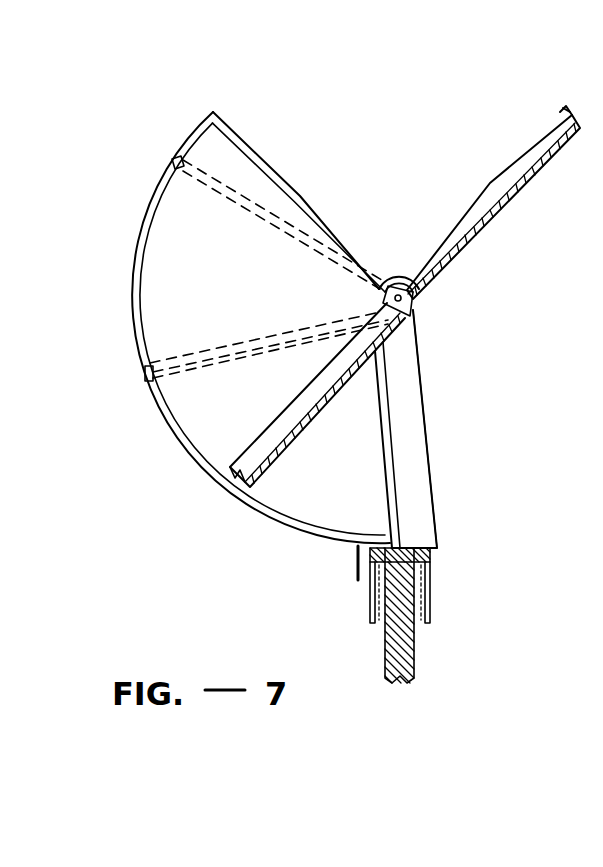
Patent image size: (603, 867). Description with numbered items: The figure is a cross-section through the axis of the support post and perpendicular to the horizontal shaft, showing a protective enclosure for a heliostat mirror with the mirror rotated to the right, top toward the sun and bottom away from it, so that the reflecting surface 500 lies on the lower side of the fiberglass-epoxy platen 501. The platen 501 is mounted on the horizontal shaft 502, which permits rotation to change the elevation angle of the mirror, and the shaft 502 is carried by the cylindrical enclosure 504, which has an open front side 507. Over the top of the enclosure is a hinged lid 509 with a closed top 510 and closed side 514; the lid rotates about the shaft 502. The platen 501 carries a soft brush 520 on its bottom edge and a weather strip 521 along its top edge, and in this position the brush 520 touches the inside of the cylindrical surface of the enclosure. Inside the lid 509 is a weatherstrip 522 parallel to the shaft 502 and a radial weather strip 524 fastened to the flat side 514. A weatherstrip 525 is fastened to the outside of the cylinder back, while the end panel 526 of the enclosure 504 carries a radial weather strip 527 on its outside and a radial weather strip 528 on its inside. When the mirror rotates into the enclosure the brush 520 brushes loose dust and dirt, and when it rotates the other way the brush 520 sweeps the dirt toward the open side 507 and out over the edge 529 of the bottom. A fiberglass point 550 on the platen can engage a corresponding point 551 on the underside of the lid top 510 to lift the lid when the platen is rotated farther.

The reflecting surface 500 is at (523, 192).
The fiberglass-epoxy platen 501 is at (562, 112).
The horizontal shaft 502 is at (392, 298).
The cylindrical enclosure 504 is at (432, 548).
The open front side 507 is at (432, 478).
The hinged lid 509 is at (213, 112).
The closed top 510 is at (290, 181).
The closed side 514 is at (250, 295).
The soft brush 520 is at (230, 468).
The weather strip 521 is at (565, 110).
The weatherstrip 522 is at (145, 373).
The radial weather strip 524 is at (235, 350).
The weatherstrip 525 is at (174, 163).
The end panel 526 is at (355, 475).
The radial weather strip 527 is at (256, 214).
The radial weather strip 528 is at (400, 511).
The edge of the bottom 529 is at (438, 537).
The fiberglass point 550 is at (337, 347).
The corresponding point 551 is at (348, 240).